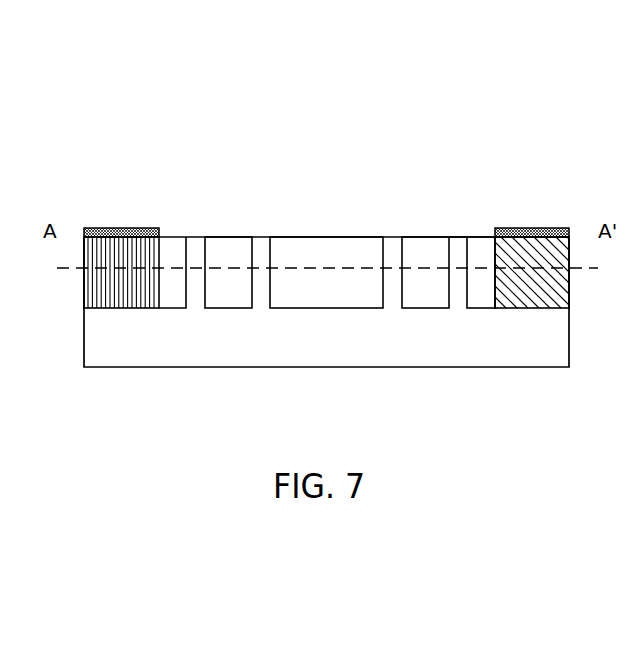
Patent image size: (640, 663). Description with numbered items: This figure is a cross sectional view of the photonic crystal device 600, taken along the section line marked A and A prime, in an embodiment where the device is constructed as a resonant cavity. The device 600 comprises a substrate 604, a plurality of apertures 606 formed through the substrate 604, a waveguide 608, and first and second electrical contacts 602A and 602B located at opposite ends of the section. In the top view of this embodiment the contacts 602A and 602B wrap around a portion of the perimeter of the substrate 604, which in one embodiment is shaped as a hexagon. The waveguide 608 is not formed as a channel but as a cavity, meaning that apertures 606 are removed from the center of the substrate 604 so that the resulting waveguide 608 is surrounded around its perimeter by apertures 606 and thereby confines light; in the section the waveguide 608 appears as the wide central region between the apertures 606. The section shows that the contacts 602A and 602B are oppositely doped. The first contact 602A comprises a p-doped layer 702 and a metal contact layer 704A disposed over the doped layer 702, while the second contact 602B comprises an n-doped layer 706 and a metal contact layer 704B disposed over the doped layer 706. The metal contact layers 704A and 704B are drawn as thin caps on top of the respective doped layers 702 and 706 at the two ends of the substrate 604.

The photonic crystal device 600 is at (222, 103).
The first electrical contact 602A is at (95, 283).
The second electrical contact 602B is at (570, 285).
The substrate 604 is at (323, 253).
The apertures 606 is at (458, 250).
The waveguide 608 is at (349, 300).
The p-doped layer 702 is at (122, 292).
The metal contact layer 704A is at (122, 226).
The metal contact layer 704B is at (527, 227).
The n-doped layer 706 is at (517, 287).